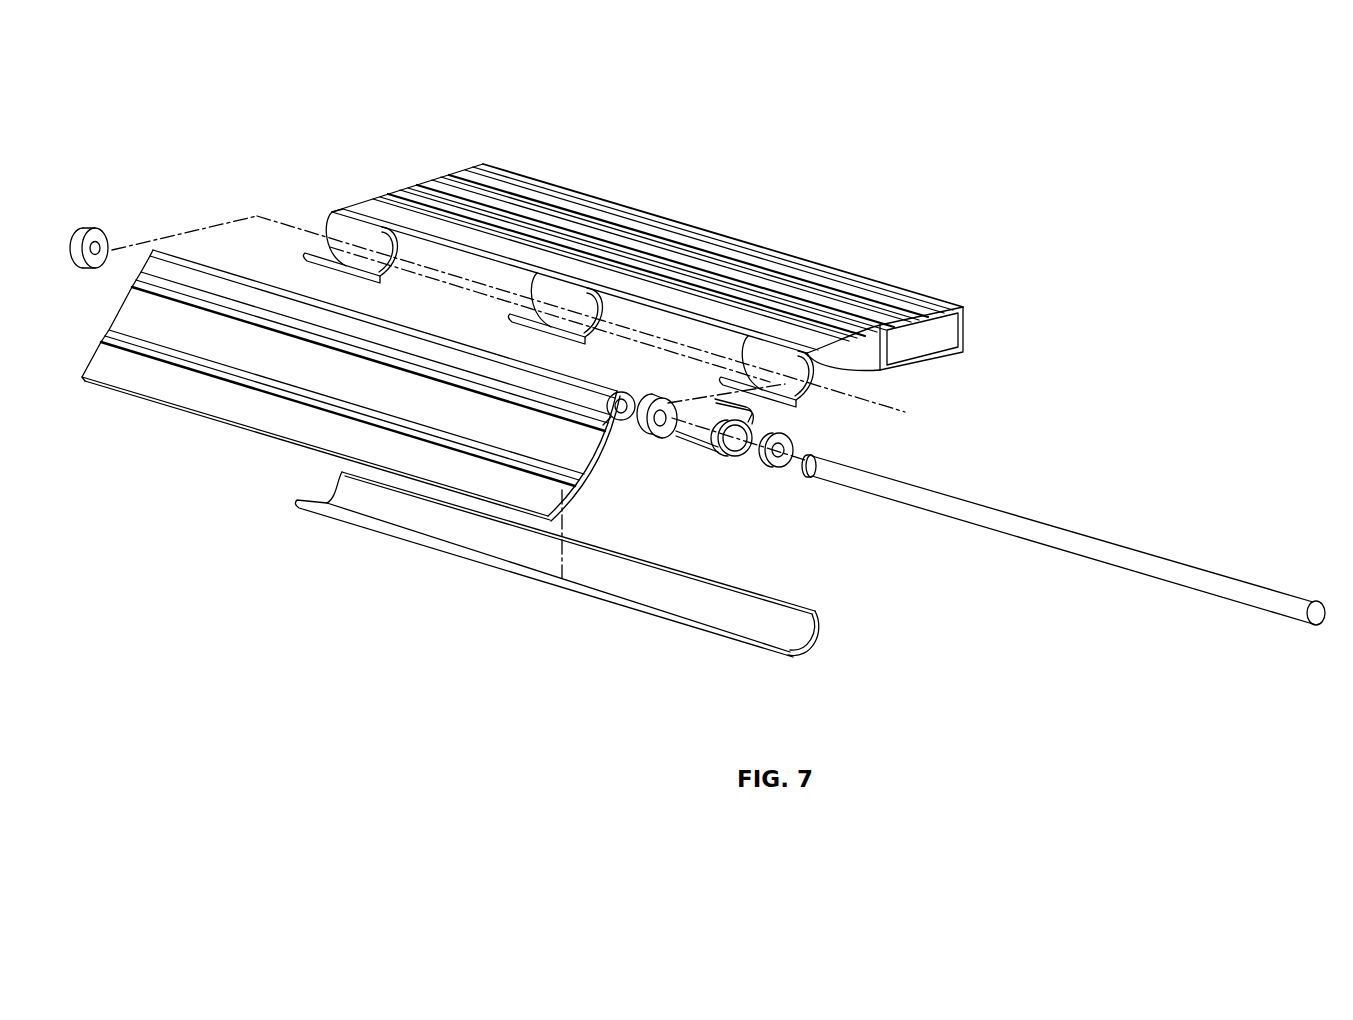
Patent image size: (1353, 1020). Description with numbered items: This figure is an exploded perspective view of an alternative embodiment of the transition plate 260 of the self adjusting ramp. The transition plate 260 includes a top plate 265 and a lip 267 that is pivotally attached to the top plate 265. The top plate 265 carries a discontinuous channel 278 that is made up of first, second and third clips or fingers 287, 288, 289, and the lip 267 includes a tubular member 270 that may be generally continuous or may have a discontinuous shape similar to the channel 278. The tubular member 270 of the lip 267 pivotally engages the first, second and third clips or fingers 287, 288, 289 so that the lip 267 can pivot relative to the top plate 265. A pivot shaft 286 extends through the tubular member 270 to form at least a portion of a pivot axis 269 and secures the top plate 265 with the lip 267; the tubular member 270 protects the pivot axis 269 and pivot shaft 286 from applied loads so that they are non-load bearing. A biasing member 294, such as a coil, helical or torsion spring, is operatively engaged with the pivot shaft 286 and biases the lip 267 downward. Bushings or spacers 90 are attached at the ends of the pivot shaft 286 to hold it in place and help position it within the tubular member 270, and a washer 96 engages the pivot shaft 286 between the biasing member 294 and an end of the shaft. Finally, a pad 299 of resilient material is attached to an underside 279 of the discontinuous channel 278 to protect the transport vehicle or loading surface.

The transition plate 260 is at (870, 128).
The top plate 265 is at (880, 291).
The lip 267 is at (228, 400).
The pivot axis 269 is at (900, 410).
The tubular member 270 is at (627, 420).
The discontinuous channel 278 is at (313, 216).
The underside 279 is at (372, 276).
The pivot shaft 286 is at (1000, 522).
The first clip or finger 287 is at (378, 262).
The second clip or finger 288 is at (588, 320).
The third clip or finger 289 is at (818, 396).
The biasing member 294 is at (740, 458).
The pad 299 is at (800, 655).
The bushing or spacer 90 is at (103, 236).
The washer 96 is at (790, 468).